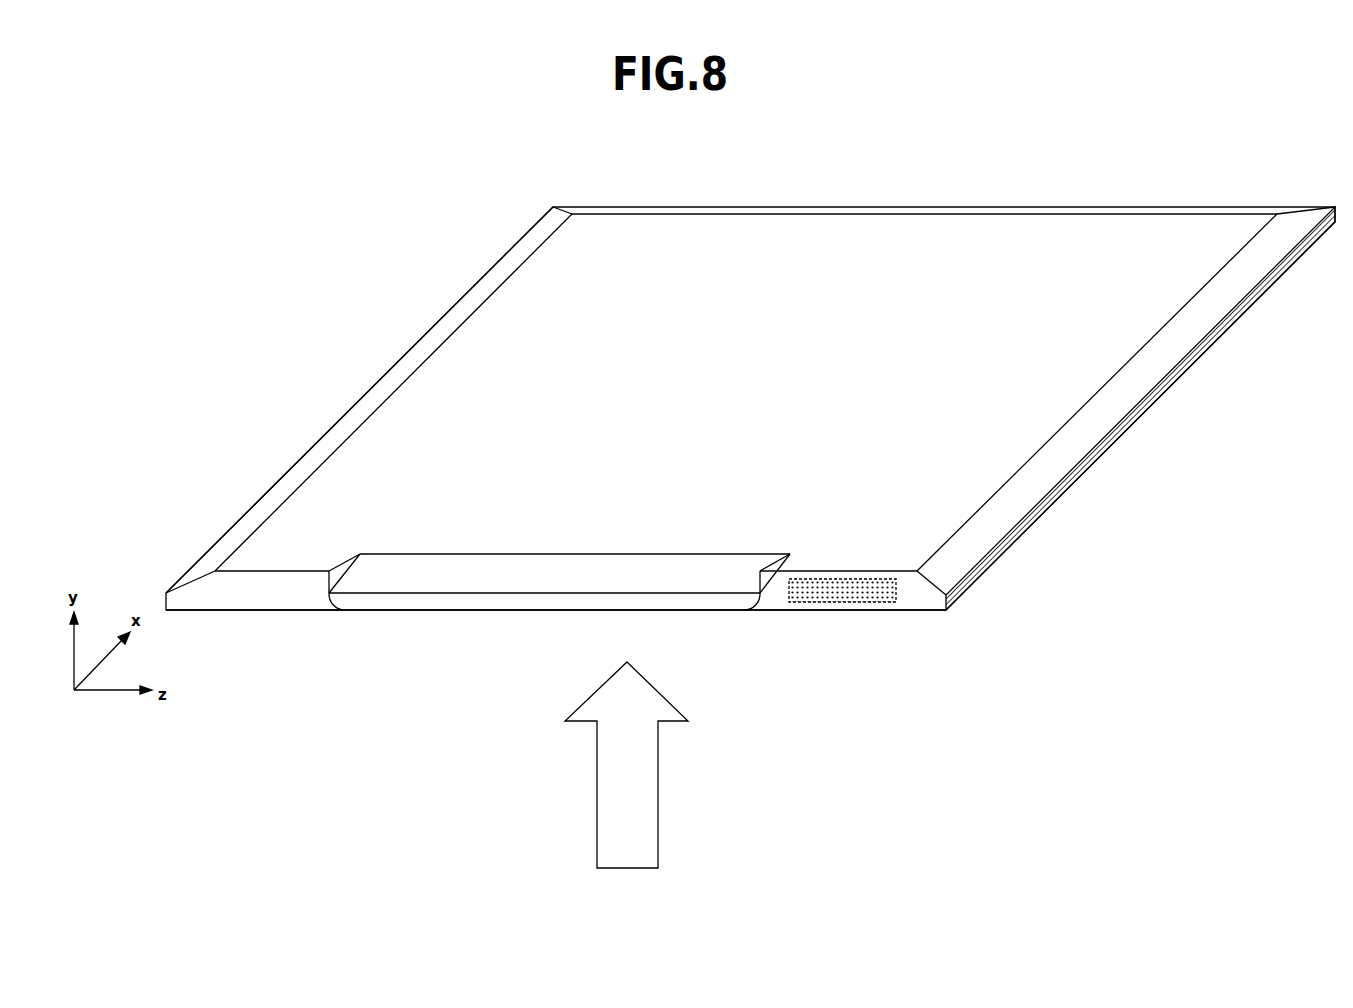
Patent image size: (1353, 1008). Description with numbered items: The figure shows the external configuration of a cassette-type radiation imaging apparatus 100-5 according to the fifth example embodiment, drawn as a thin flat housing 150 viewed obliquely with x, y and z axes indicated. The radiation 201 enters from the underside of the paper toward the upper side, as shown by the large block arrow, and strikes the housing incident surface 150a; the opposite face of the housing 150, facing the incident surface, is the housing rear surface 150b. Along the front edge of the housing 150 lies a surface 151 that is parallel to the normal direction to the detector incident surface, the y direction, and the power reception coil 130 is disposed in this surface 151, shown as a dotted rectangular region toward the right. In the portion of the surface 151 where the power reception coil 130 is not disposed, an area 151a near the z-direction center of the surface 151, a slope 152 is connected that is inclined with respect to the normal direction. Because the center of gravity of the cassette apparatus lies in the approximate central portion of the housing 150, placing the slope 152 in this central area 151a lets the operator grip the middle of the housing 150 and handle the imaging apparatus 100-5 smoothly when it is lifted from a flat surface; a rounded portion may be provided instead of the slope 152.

The radiation imaging apparatus 100-5 is at (468, 156).
The housing 150 is at (1025, 497).
The housing incident surface 150a is at (258, 622).
The housing rear surface 150b is at (332, 500).
The surface 151 is at (773, 602).
The area 151a is at (545, 610).
The slope 152 is at (678, 585).
The power reception coil 130 is at (846, 600).
The radiation 201 is at (658, 806).